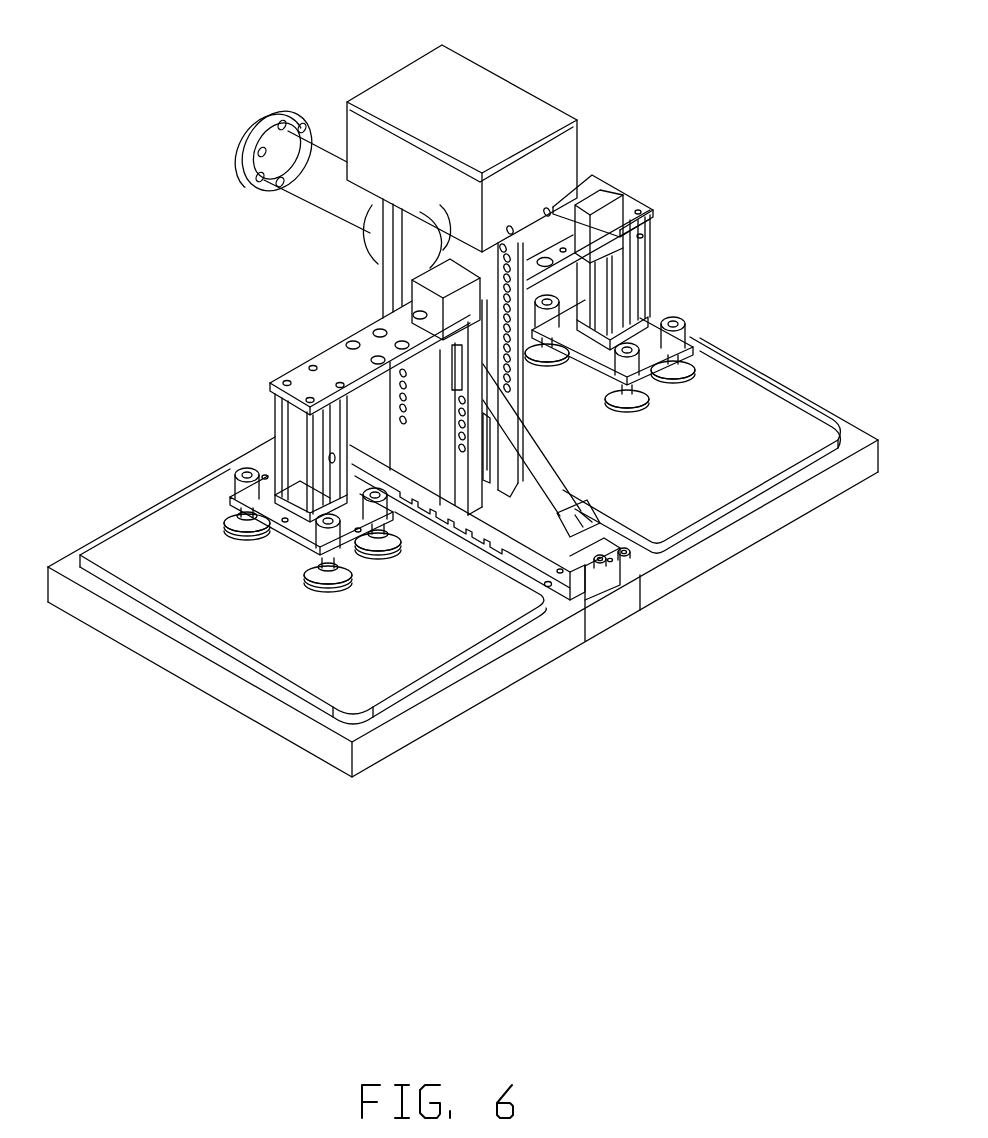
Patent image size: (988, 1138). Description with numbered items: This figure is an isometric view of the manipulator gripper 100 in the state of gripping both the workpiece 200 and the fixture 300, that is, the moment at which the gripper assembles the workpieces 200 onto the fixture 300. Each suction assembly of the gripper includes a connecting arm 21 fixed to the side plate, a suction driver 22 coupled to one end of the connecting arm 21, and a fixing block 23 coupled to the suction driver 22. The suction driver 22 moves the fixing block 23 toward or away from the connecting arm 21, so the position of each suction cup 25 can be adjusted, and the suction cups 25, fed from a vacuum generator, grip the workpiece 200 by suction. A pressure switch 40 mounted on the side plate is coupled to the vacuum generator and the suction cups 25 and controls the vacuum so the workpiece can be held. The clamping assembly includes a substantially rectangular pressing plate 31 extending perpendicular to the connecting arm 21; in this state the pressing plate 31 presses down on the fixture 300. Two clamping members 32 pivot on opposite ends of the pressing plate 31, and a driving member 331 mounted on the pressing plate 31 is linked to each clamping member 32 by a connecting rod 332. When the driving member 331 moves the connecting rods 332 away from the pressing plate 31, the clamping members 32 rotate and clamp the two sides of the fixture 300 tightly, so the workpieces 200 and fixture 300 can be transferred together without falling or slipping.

The manipulator gripper 100 is at (563, 36).
The workpiece 200 is at (147, 570).
The fixture 300 is at (190, 665).
The connecting arm 21 is at (338, 360).
The suction driver 22 is at (285, 427).
The fixing block 23 is at (230, 496).
The suction cup 25 is at (225, 532).
The pressing plate 31 is at (513, 548).
The clamping member 32 is at (592, 590).
The driving member 331 is at (493, 458).
The connecting rod 332 is at (587, 517).
The pressure switch 40 is at (433, 278).